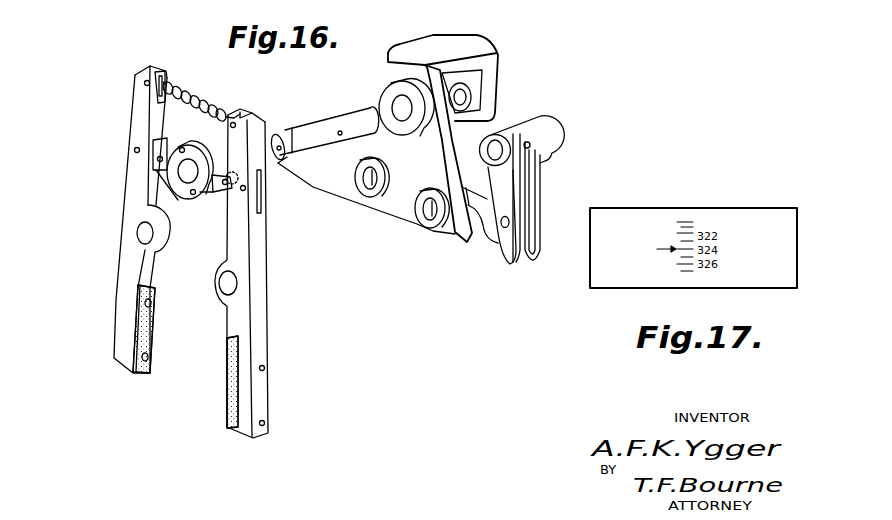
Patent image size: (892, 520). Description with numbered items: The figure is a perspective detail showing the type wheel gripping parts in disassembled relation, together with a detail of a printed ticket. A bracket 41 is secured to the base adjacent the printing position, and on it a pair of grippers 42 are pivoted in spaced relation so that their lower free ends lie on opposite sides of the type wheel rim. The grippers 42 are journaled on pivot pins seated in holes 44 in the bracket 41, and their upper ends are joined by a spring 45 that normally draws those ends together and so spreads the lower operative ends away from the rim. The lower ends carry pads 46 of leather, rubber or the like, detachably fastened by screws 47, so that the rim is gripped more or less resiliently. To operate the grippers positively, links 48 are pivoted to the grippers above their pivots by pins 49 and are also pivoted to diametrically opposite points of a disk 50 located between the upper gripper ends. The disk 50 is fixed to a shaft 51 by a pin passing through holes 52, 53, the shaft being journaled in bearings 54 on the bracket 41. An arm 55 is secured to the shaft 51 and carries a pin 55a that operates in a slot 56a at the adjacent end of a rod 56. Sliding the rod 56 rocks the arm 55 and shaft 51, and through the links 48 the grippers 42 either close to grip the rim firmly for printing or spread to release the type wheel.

The bracket 41 is at (330, 177).
The grippers 42 is at (132, 193).
The holes 44 is at (372, 198).
The spring 45 is at (192, 88).
The pads 46 is at (137, 327).
The screws 47 is at (152, 305).
The links 48 is at (158, 138).
The pins 49 is at (134, 150).
The disk 50 is at (183, 192).
The shaft 51 is at (310, 130).
The hole 52 is at (342, 131).
The hole 53 is at (216, 165).
The bearings 54 is at (398, 104).
The arm 55 is at (540, 174).
The pin 55a is at (503, 227).
The rod 56 is at (480, 212).
The slot 56a is at (503, 265).